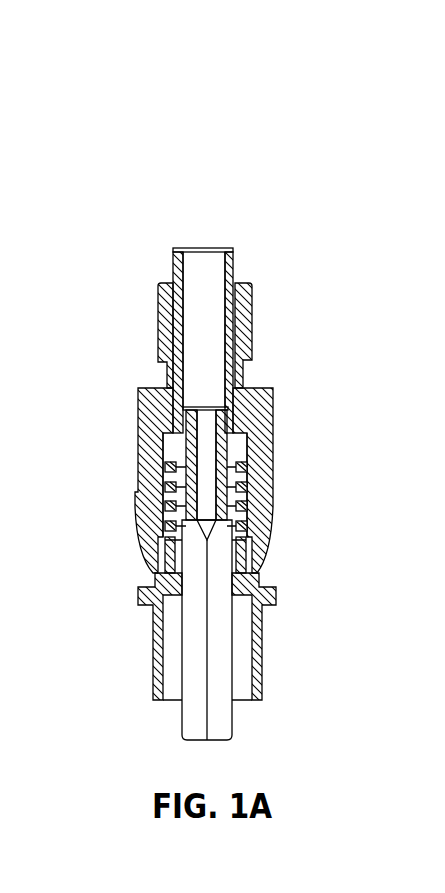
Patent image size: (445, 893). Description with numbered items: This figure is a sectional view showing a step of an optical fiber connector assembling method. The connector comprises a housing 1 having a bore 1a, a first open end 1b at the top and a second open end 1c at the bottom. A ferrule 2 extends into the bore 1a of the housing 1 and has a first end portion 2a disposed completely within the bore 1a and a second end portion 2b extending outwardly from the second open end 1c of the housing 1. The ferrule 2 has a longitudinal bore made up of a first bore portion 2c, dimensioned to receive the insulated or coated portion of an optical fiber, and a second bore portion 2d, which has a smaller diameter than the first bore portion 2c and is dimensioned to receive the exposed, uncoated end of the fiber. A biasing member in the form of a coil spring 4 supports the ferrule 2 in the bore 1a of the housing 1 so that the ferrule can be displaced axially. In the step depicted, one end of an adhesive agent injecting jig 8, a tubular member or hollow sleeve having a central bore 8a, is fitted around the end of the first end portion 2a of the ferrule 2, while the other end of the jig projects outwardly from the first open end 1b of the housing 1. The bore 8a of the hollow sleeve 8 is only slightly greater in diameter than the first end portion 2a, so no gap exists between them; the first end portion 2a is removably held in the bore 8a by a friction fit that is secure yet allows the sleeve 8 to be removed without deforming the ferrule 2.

The housing 1 is at (265, 406).
The bore 1a is at (243, 450).
The first open end 1b is at (238, 283).
The second open end 1c is at (237, 703).
The ferrule 2 is at (362, 420).
The first end portion 2a is at (246, 490).
The second end portion 2b is at (222, 660).
The first bore portion 2c is at (207, 448).
The second bore portion 2d is at (188, 651).
The coil spring 4 is at (175, 507).
The adhesive agent injecting jig 8 is at (228, 267).
The central bore 8a is at (202, 268).